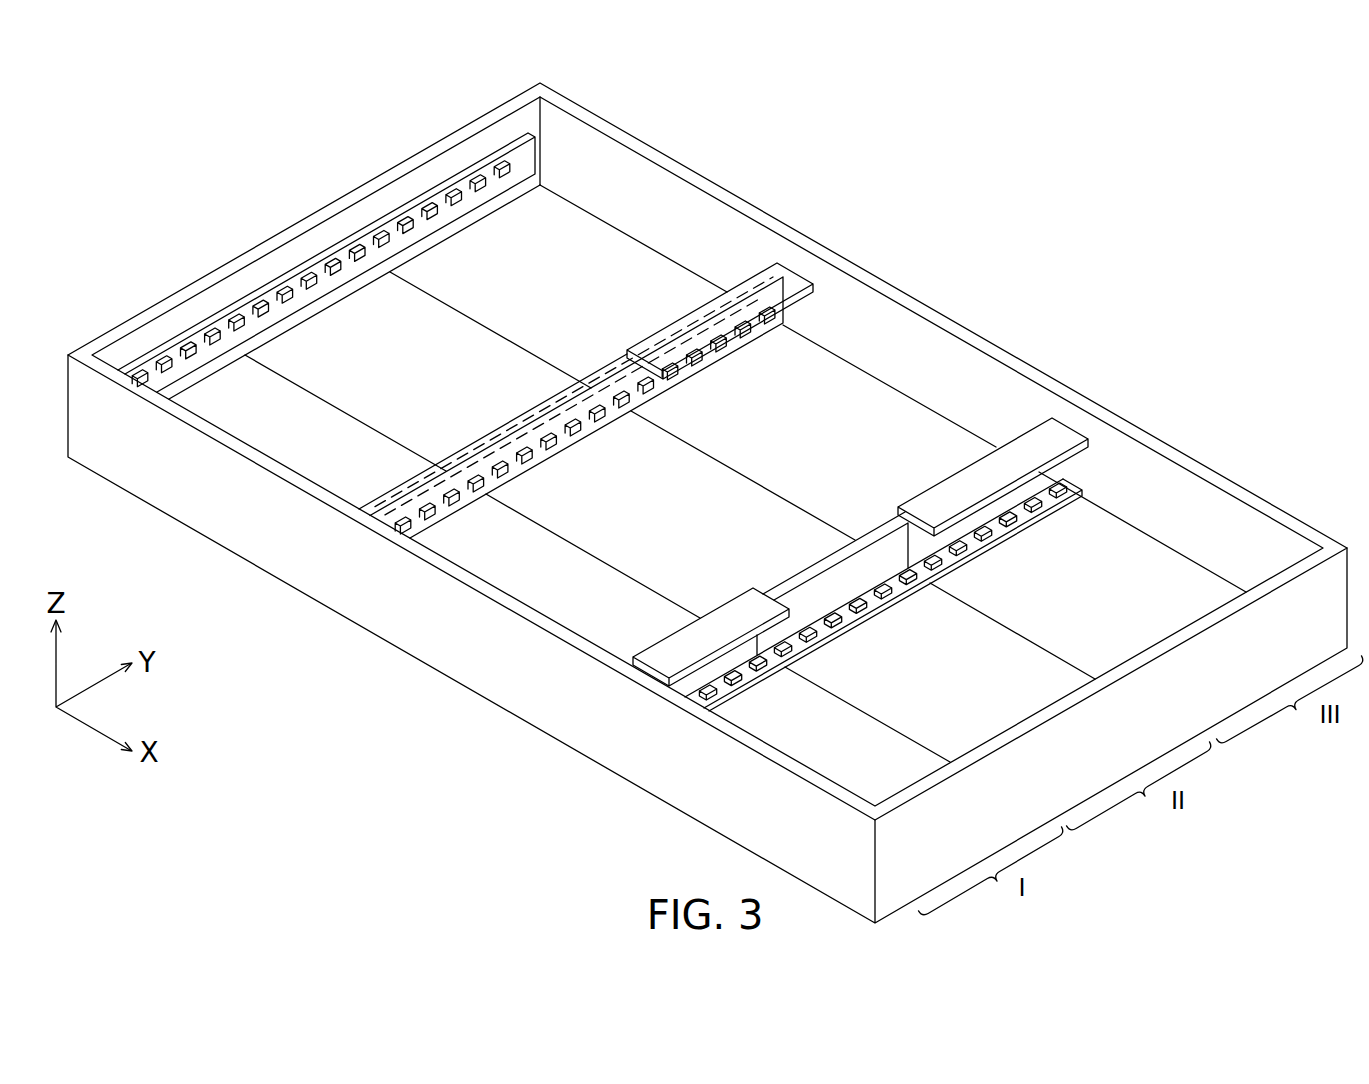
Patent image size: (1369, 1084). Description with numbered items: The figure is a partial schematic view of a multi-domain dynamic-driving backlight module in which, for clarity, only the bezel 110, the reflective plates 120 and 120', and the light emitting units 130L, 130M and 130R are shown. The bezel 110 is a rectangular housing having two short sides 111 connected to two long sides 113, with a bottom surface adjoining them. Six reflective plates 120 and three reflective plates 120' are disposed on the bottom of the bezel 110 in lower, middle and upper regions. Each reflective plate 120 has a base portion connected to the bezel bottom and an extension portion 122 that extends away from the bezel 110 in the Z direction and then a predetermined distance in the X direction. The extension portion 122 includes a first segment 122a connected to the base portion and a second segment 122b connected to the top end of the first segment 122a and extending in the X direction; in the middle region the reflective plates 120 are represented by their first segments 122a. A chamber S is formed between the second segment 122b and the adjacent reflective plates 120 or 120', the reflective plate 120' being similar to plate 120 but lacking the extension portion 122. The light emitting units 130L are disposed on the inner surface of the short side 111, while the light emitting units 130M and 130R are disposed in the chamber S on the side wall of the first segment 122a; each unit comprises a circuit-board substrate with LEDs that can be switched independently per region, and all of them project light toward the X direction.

The bezel 110 is at (848, 262).
The short side 111 is at (266, 233).
The long side 113 is at (478, 585).
The reflective plate 120 is at (550, 441).
The reflective plate 120' is at (953, 664).
The extension portion 122 is at (372, 489).
The first segment 122a is at (530, 402).
The second segment 122b is at (765, 278).
The light emitting unit 130L is at (383, 208).
The light emitting unit 130M is at (552, 457).
The light emitting unit 130R is at (903, 600).
The chamber S is at (626, 430).